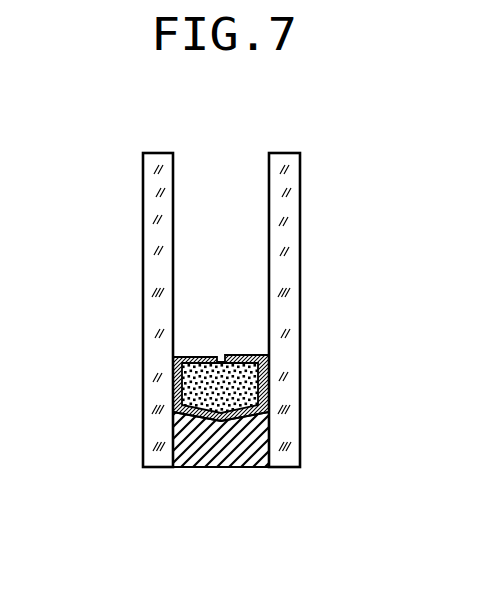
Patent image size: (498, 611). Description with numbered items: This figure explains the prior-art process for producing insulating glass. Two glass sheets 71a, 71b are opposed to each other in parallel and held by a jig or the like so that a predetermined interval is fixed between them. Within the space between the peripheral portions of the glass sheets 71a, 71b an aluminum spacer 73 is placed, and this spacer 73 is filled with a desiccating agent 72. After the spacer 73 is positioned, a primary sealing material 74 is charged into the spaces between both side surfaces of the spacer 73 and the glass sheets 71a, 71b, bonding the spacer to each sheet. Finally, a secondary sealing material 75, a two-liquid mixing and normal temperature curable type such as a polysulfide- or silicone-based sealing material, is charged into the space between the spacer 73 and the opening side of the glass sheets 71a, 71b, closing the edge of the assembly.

The glass sheet 71a is at (152, 240).
The glass sheet 71b is at (292, 253).
The desiccating agent 72 is at (262, 388).
The aluminum spacer 73 is at (249, 357).
The primary sealing material 74 is at (174, 391).
The secondary sealing material 75 is at (214, 453).